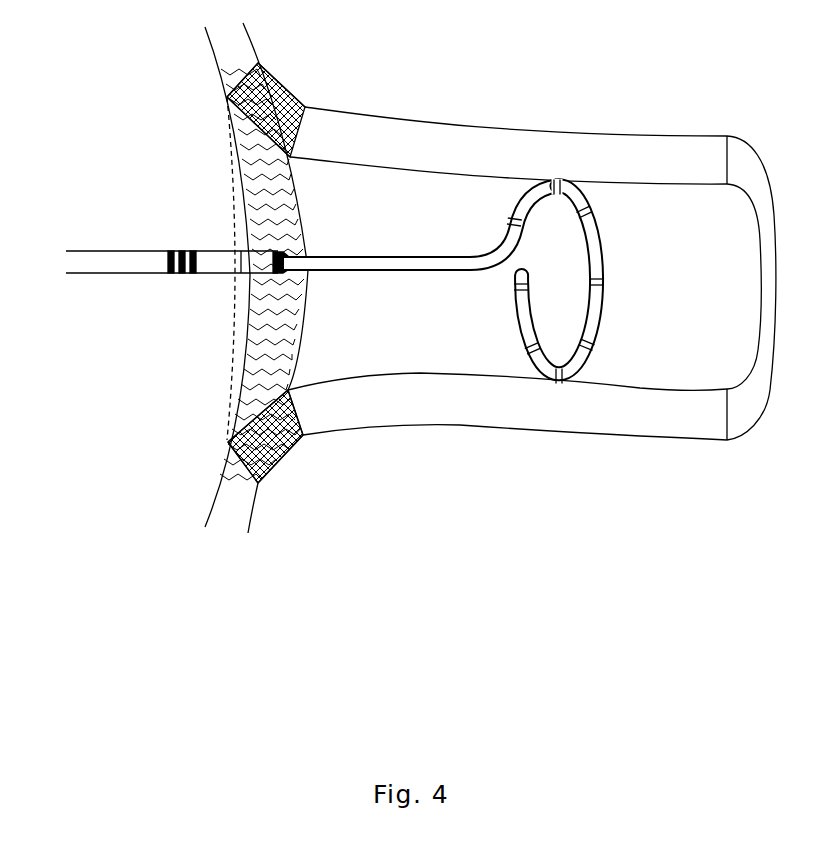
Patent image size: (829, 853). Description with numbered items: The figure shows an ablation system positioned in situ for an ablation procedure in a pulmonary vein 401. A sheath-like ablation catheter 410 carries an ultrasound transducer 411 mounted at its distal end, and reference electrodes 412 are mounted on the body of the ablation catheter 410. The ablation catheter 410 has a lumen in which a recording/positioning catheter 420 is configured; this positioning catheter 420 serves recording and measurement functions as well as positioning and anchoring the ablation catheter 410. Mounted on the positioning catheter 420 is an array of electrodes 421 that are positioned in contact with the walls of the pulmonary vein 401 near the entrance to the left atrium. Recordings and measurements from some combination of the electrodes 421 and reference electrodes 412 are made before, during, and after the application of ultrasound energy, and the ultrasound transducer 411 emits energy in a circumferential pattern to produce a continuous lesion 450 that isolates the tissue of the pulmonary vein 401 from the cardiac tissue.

The pulmonary vein 401 is at (636, 132).
The ablation catheter 410 is at (98, 248).
The ultrasound transducer 411 is at (236, 278).
The reference electrodes 412 is at (190, 277).
The recording/positioning catheter 420 is at (445, 276).
The array of electrodes 421 is at (520, 345).
The lesion 450 is at (292, 88).